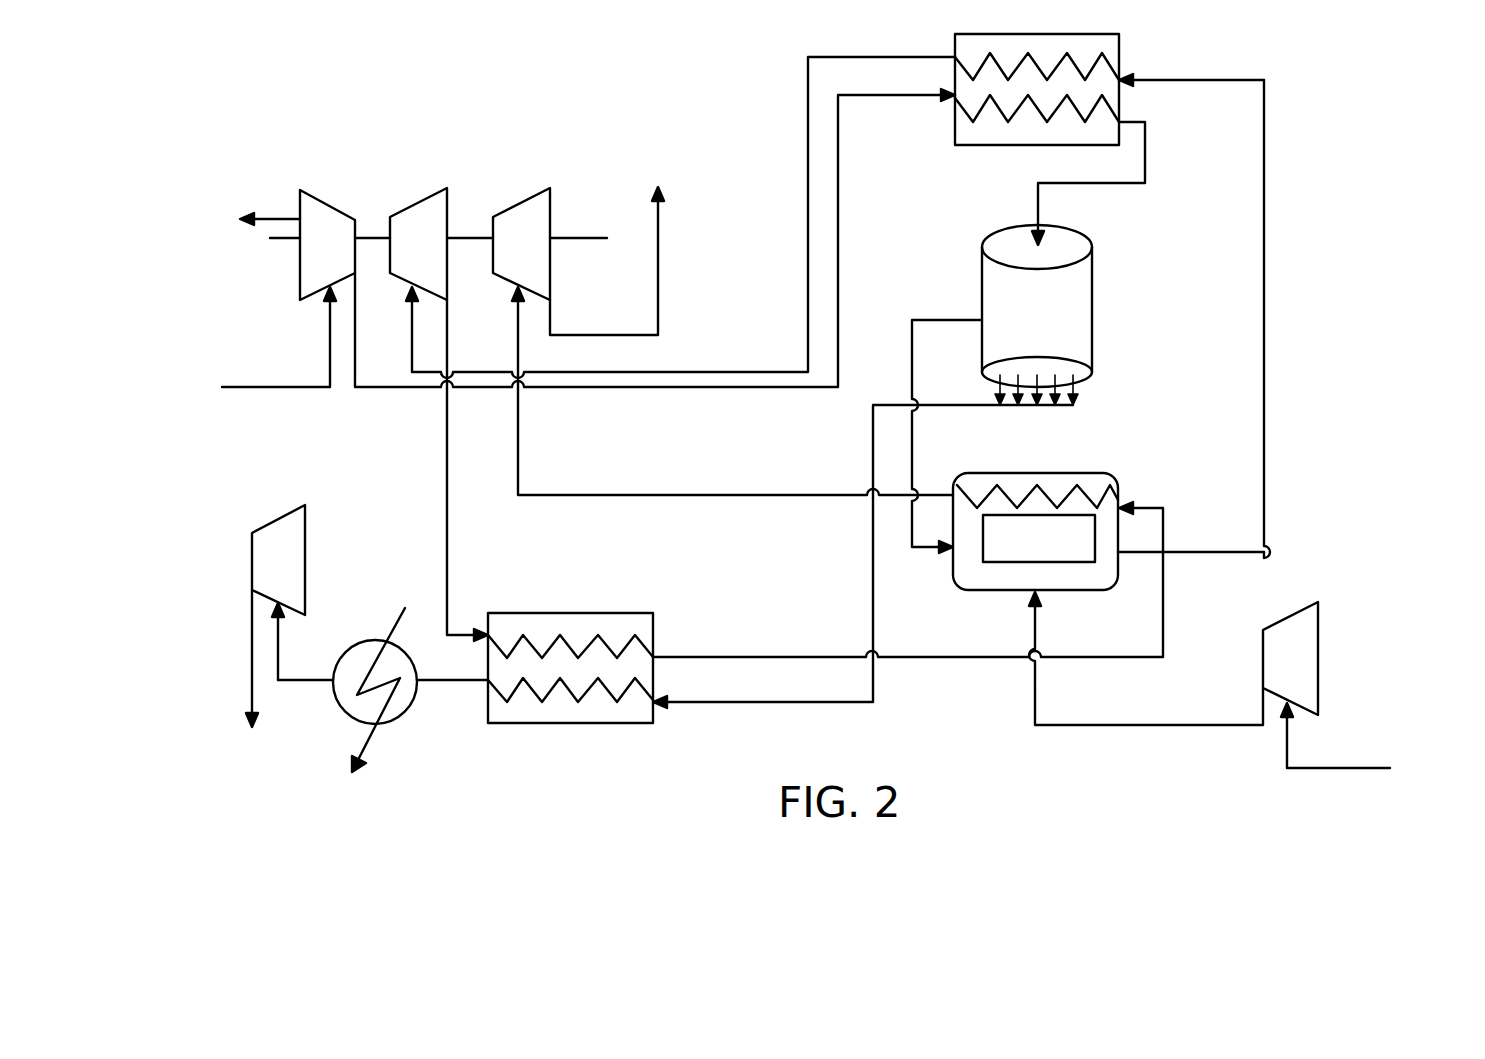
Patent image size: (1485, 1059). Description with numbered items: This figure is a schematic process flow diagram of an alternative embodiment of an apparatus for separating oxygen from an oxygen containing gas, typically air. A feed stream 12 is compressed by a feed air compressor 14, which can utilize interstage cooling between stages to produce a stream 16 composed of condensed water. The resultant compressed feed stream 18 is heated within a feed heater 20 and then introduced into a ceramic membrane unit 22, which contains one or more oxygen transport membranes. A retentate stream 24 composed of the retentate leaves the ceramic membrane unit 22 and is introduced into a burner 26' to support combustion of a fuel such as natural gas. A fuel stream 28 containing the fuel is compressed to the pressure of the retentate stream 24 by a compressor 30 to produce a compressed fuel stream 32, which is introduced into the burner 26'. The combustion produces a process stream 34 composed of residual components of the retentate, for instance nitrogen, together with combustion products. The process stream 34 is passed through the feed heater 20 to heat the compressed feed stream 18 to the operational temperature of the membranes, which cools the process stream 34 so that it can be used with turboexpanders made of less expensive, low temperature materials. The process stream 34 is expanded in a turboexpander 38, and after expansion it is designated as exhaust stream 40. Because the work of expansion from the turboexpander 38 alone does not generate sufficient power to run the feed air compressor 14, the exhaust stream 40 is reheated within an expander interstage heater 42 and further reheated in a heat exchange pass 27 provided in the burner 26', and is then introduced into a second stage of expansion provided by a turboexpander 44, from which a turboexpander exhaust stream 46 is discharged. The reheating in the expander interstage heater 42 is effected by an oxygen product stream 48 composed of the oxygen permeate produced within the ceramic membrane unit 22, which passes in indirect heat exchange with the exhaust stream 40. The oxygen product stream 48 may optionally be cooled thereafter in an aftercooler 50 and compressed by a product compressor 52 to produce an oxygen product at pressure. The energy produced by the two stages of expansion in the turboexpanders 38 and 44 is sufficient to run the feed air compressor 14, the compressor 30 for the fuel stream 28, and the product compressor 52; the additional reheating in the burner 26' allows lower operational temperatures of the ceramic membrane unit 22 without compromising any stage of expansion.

The feed stream 12 is at (290, 387).
The feed air compressor 14 is at (303, 273).
The stream composed of condensed water 16 is at (280, 216).
The compressed feed stream 18 is at (693, 390).
The feed heater 20 is at (978, 147).
The ceramic membrane unit 22 is at (1108, 274).
The retentate stream 24 is at (912, 320).
The burner 26' is at (1031, 560).
The heat exchange pass 27 is at (1100, 487).
The fuel stream 28 is at (1345, 768).
The compressor 30 is at (1300, 655).
The compressed fuel stream 32 is at (1183, 725).
The process stream 34 is at (1266, 455).
The turboexpander 38 is at (425, 212).
The exhaust stream 40 is at (445, 512).
The expander interstage heater 42 is at (487, 706).
The turboexpander 44 is at (538, 210).
The turboexpander exhaust stream 46 is at (660, 262).
The oxygen product stream 48 is at (870, 580).
The aftercooler 50 is at (393, 708).
The product compressor 52 is at (288, 558).